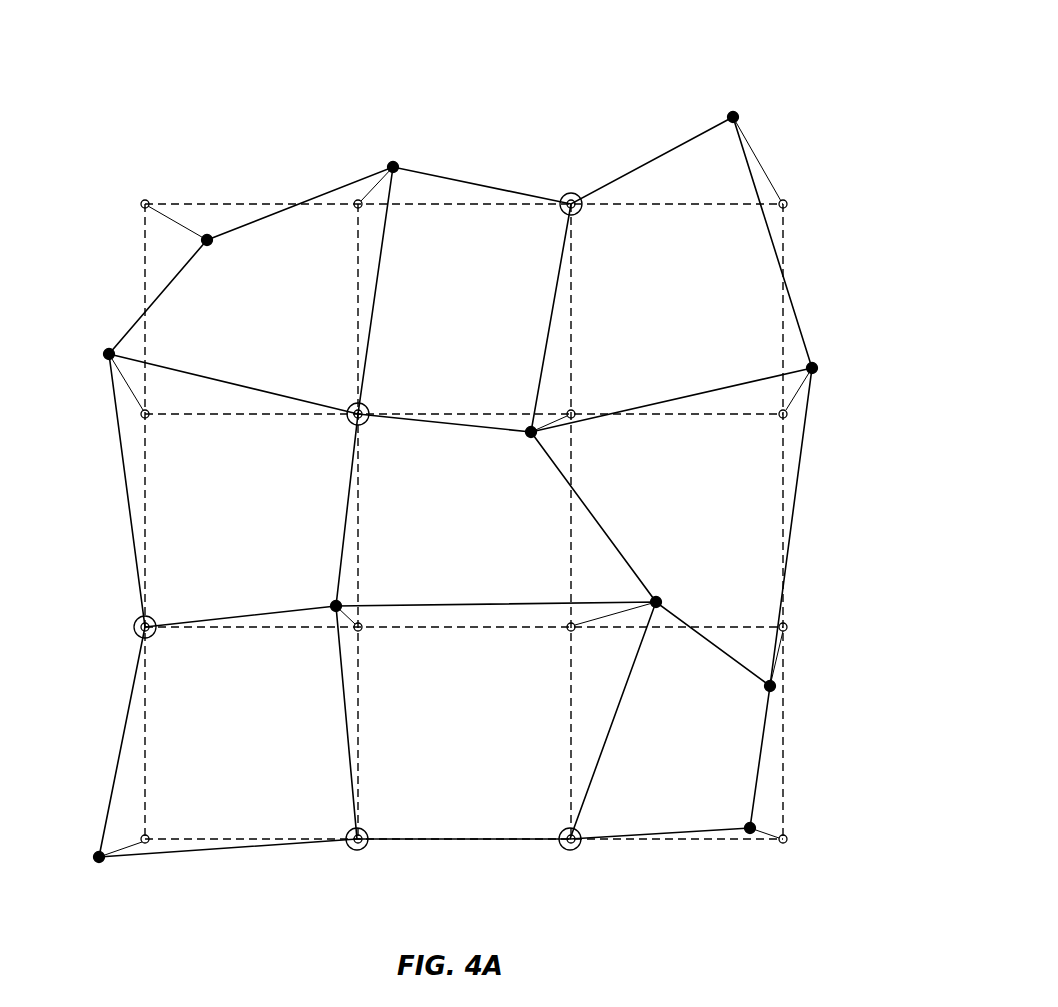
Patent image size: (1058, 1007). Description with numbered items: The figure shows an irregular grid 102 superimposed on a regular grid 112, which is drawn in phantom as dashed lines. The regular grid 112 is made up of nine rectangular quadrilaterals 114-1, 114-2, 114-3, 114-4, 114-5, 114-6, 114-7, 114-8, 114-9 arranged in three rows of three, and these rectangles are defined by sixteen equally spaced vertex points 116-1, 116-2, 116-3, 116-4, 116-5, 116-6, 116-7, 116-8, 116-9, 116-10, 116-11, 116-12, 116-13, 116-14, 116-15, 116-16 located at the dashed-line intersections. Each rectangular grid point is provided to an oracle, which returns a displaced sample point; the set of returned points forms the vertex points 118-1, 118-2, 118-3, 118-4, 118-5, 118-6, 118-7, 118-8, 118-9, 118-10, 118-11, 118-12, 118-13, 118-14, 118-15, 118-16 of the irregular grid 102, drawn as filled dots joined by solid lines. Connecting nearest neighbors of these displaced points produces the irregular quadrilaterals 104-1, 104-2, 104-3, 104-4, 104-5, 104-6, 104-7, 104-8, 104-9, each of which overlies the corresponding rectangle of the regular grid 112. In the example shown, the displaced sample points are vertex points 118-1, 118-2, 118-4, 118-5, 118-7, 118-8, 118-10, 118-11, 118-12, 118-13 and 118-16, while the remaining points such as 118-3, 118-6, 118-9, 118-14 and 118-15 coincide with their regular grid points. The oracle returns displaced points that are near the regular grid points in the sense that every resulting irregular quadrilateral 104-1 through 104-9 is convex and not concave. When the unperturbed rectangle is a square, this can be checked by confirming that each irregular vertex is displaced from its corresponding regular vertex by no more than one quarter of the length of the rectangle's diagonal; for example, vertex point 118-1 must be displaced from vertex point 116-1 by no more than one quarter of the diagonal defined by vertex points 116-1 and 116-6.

The irregular grid 102 is at (678, 100).
The regular grid 112 is at (280, 170).
The irregular quadrilateral 104-1 is at (251, 309).
The irregular quadrilateral 104-2 is at (464, 309).
The irregular quadrilateral 104-3 is at (677, 309).
The irregular quadrilateral 104-4 is at (251, 520).
The irregular quadrilateral 104-5 is at (464, 520).
The irregular quadrilateral 104-6 is at (677, 520).
The irregular quadrilateral 104-7 is at (251, 733).
The irregular quadrilateral 104-8 is at (464, 733).
The irregular quadrilateral 104-9 is at (677, 733).
The rectangular quadrilateral 114-1 is at (251, 290).
The rectangular quadrilateral 114-2 is at (464, 299).
The rectangular quadrilateral 114-3 is at (671, 274).
The rectangular quadrilateral 114-4 is at (233, 490).
The rectangular quadrilateral 114-5 is at (496, 510).
The rectangular quadrilateral 114-6 is at (671, 527).
The rectangular quadrilateral 114-7 is at (228, 731).
The rectangular quadrilateral 114-8 is at (496, 720).
The rectangular quadrilateral 114-9 is at (670, 720).
The vertex point 116-1 is at (147, 200).
The vertex point 116-2 is at (358, 199).
The vertex point 116-3 is at (574, 196).
The vertex point 116-4 is at (788, 205).
The vertex point 116-5 is at (142, 418).
The vertex point 116-6 is at (363, 420).
The vertex point 116-7 is at (575, 412).
The vertex point 116-8 is at (788, 415).
The vertex point 116-9 is at (142, 632).
The vertex point 116-10 is at (361, 632).
The vertex point 116-11 is at (569, 632).
The vertex point 116-12 is at (788, 627).
The vertex point 116-13 is at (143, 842).
The vertex point 116-14 is at (352, 847).
The vertex point 116-15 is at (565, 847).
The vertex point 116-16 is at (788, 840).
The vertex point 118-1 is at (203, 240).
The vertex point 118-2 is at (397, 165).
The vertex point 118-3 is at (564, 194).
The vertex point 118-4 is at (738, 117).
The vertex point 118-5 is at (107, 350).
The vertex point 118-6 is at (352, 406).
The vertex point 118-7 is at (531, 438).
The vertex point 118-8 is at (815, 365).
The vertex point 118-9 is at (138, 620).
The vertex point 118-10 is at (332, 604).
The vertex point 118-11 is at (661, 602).
The vertex point 118-12 is at (775, 686).
The vertex point 118-13 is at (97, 852).
The vertex point 118-14 is at (363, 849).
The vertex point 118-15 is at (576, 849).
The vertex point 118-16 is at (755, 826).